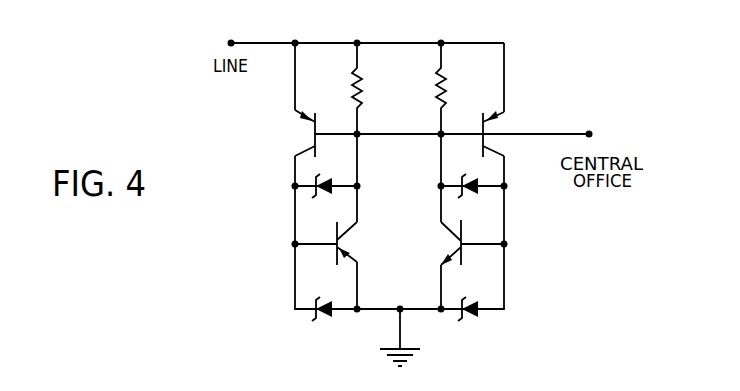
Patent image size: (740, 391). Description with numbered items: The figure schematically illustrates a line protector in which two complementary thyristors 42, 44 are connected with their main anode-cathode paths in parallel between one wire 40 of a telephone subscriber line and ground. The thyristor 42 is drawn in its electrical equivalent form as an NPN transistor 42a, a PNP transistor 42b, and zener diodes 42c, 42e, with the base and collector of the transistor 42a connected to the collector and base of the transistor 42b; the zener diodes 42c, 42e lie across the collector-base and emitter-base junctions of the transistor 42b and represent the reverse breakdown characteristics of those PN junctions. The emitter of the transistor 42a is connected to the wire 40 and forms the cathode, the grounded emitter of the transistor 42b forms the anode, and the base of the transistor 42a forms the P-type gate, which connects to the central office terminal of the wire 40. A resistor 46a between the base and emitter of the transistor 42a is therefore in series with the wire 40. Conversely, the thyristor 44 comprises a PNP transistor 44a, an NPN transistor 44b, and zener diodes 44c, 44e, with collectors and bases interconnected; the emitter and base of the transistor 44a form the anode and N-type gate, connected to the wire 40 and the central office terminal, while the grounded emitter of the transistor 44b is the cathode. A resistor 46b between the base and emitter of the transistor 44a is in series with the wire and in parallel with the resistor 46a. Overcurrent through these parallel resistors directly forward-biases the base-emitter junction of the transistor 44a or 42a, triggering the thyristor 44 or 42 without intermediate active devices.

The wire 40 is at (329, 43).
The thyristor 42 is at (284, 217).
The NPN transistor 42a is at (313, 135).
The PNP transistor 42b is at (342, 244).
The zener diode 42c is at (318, 178).
The zener diode 42e is at (327, 319).
The thyristor 44 is at (518, 210).
The PNP transistor 44a is at (488, 133).
The NPN transistor 44b is at (459, 245).
The zener diode 44c is at (461, 178).
The zener diode 44e is at (476, 319).
The resistor 46a is at (362, 100).
The resistor 46b is at (445, 100).